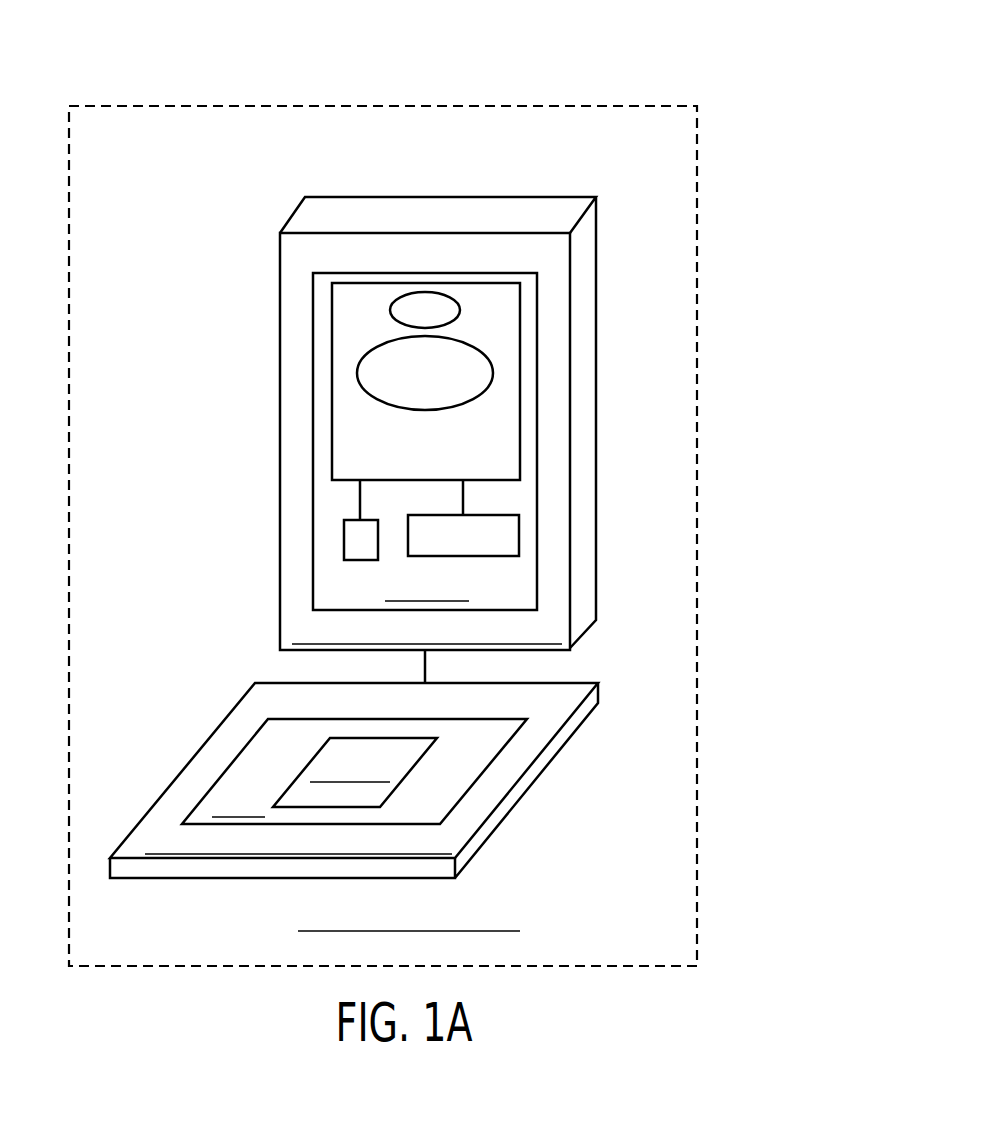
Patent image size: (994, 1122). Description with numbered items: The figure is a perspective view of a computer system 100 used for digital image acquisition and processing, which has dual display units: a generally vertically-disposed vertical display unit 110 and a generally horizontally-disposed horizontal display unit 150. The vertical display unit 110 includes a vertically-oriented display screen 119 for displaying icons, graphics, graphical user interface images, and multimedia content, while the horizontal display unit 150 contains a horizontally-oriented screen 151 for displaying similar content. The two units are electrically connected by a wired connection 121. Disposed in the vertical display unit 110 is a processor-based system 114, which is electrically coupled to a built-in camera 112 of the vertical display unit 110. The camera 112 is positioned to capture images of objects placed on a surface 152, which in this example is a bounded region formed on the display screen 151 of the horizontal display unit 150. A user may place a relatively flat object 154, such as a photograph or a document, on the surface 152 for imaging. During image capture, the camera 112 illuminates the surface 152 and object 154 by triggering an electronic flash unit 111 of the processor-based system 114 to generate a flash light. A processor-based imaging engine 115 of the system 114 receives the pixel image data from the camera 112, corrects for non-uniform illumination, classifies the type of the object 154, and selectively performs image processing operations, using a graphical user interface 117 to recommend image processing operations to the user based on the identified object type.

The computer system 100 is at (693, 51).
The vertical display unit 110 is at (597, 465).
The electronic flash unit 111 is at (344, 540).
The camera 112 is at (519, 536).
The processor-based system 114 is at (520, 414).
The imaging engine 115 is at (494, 373).
The graphical user interface 117 is at (460, 309).
The display screen 119 is at (313, 440).
The wired connection 121 is at (425, 665).
The horizontal display unit 150 is at (530, 794).
The display screen 151 is at (485, 771).
The surface 152 is at (270, 778).
The object 154 is at (300, 768).